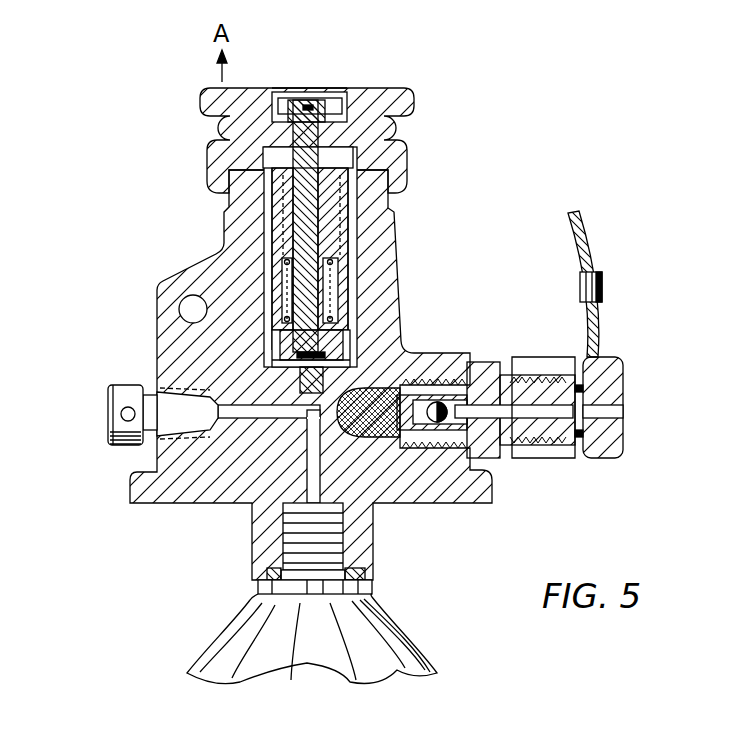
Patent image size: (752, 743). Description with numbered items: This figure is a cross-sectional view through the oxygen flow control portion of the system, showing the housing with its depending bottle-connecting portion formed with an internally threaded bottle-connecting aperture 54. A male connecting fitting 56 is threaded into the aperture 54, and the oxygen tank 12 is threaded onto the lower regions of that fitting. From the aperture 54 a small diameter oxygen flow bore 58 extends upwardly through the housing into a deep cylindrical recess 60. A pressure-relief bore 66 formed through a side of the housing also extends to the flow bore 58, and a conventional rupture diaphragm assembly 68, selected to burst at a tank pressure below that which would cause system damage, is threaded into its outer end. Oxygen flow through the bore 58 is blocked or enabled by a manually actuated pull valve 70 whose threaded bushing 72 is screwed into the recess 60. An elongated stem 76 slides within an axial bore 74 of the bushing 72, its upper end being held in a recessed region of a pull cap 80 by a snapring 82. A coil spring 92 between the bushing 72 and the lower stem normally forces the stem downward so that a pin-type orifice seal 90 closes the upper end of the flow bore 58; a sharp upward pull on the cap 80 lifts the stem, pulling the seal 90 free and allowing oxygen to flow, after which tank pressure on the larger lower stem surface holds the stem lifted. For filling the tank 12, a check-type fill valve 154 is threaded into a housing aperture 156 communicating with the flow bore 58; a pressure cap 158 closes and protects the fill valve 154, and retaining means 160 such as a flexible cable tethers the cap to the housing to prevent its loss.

The oxygen tank 12 is at (238, 645).
The bottle-connecting aperture 54 is at (288, 538).
The connecting fitting 56 is at (368, 587).
The oxygen flow bore 58 is at (303, 483).
The cylindrical recess 60 is at (350, 240).
The pressure-relief bore 66 is at (252, 405).
The rupture diaphragm assembly 68 is at (122, 387).
The pull valve 70 is at (273, 215).
The bushing 72 is at (275, 225).
The axial bore 74 is at (363, 208).
The stem 76 is at (300, 212).
The pull cap 80 is at (282, 100).
The snapring 82 is at (332, 98).
The orifice seal 90 is at (345, 323).
The coil spring 92 is at (330, 280).
The fill valve 154 is at (336, 403).
The housing aperture 156 is at (330, 393).
The pressure cap 158 is at (545, 442).
The retaining means 160 is at (597, 325).